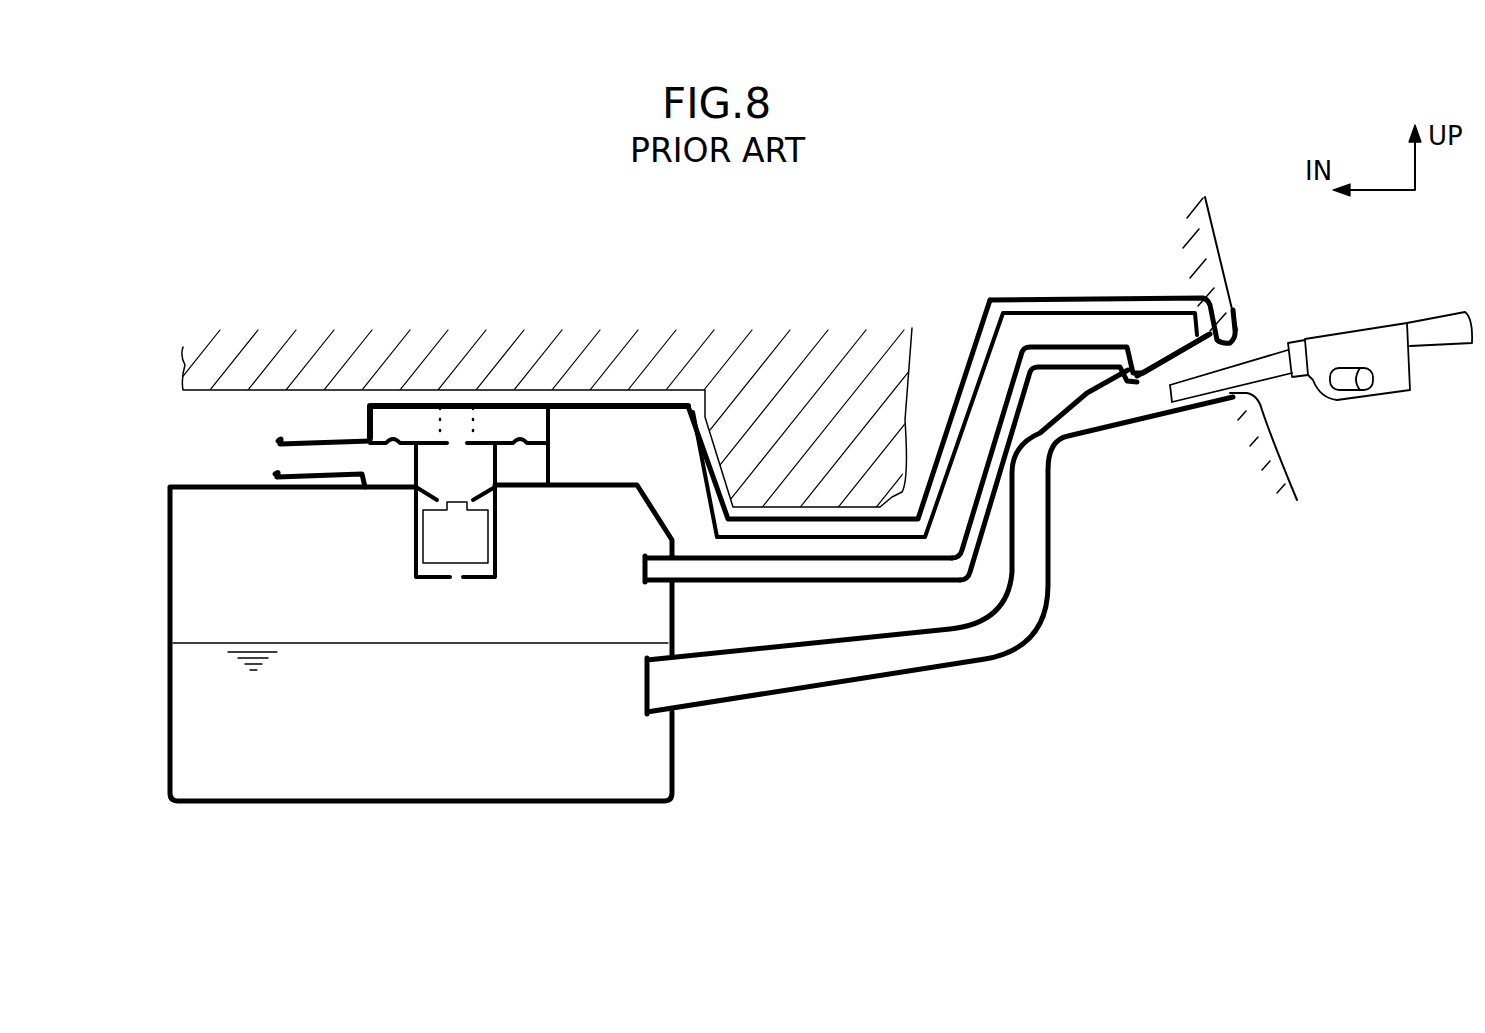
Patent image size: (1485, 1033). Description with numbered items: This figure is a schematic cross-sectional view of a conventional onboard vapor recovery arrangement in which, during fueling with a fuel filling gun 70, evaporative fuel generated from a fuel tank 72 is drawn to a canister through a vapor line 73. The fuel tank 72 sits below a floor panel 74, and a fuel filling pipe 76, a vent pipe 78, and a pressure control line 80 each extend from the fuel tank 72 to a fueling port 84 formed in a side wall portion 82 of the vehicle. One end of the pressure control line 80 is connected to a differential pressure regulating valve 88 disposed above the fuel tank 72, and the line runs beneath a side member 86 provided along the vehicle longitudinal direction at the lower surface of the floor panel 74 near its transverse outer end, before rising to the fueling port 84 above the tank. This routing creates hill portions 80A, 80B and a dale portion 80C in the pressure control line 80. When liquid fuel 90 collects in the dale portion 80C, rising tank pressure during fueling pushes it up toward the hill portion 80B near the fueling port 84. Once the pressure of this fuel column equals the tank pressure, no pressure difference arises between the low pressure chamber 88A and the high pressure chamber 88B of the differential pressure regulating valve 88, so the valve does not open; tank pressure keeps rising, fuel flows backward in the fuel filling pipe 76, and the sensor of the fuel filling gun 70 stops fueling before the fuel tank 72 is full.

The fuel filling gun 70 is at (1318, 335).
The fuel tank 72 is at (680, 790).
The vapor line 73 is at (322, 430).
The floor panel 74 is at (317, 391).
The fuel filling pipe 76 is at (1048, 600).
The vent pipe 78 is at (810, 582).
The pressure control line 80 is at (802, 369).
The hill portion 80A is at (618, 397).
The hill portion 80B is at (1040, 298).
The dale portion 80C is at (797, 516).
The side wall portion 82 is at (1207, 293).
The fueling port 84 is at (1250, 386).
The side member 86 is at (937, 477).
The differential pressure regulating valve 88 is at (492, 436).
The low pressure chamber 88A is at (507, 417).
The high pressure chamber 88B is at (487, 462).
The liquid fuel 90 is at (953, 470).